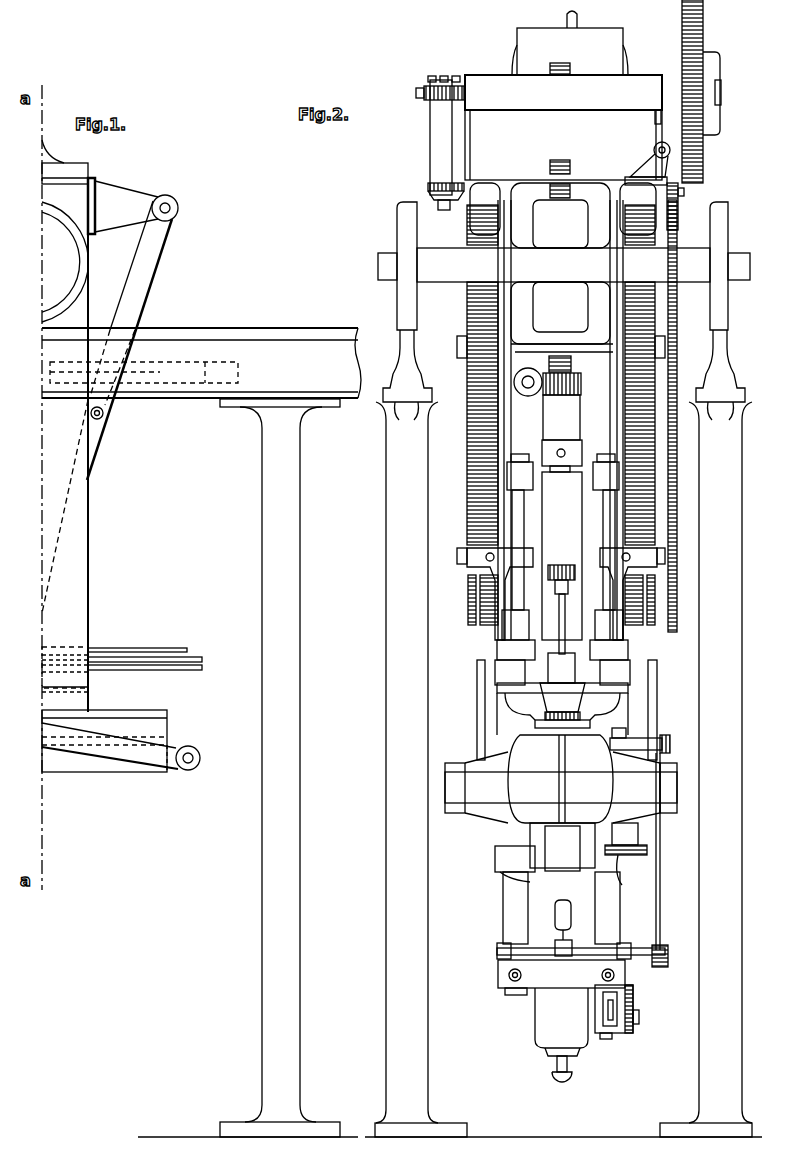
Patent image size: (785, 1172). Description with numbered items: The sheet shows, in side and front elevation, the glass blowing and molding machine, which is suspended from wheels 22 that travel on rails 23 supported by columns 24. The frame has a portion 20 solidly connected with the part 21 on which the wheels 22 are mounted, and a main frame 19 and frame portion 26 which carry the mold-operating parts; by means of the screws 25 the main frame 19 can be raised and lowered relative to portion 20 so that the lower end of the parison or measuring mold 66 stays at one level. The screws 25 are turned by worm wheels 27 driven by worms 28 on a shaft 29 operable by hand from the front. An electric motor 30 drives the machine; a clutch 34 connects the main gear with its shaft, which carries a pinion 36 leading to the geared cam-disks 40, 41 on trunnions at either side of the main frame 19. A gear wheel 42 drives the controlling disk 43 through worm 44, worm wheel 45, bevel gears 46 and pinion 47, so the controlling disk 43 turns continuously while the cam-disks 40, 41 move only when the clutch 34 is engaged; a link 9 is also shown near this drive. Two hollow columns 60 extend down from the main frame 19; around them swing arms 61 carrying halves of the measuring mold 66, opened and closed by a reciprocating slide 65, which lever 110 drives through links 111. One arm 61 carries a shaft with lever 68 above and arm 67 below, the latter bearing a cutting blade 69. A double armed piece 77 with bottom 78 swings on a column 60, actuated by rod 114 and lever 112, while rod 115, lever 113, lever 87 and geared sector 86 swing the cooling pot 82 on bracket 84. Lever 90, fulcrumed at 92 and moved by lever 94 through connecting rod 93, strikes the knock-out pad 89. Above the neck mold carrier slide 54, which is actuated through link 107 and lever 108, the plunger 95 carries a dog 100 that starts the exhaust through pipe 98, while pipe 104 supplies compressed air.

In FIG. 2, the link 9 is at (654, 150).
In FIG. 1, the main frame 19 is at (75, 577).
In FIG. 2, the main frame 19 is at (508, 265).
In FIG. 2, the frame portion 20 is at (563, 231).
In FIG. 2, the frame part 21 is at (563, 265).
In FIG. 1, the wheels 22 is at (65, 262).
In FIG. 2, the wheels 22 is at (400, 226).
In FIG. 1, the rails 23 is at (201, 363).
In FIG. 2, the rails 23 is at (408, 364).
In FIG. 1, the columns 24 is at (248, 768).
In FIG. 2, the columns 24 is at (563, 769).
In FIG. 2, the screws 25 is at (560, 160).
In FIG. 2, the frame portion 26 is at (562, 531).
In FIG. 2, the worm wheels 27 is at (562, 406).
In FIG. 2, the worms 28 is at (530, 368).
In FIG. 1, the shaft 29 is at (163, 384).
In FIG. 2, the shaft 29 is at (524, 392).
In FIG. 2, the electric motor 30 is at (563, 60).
In FIG. 2, the clutch 34 is at (710, 78).
In FIG. 2, the pinion 36 is at (560, 63).
In FIG. 2, the geared cam-disk 40 is at (472, 367).
In FIG. 2, the geared cam-disk 41 is at (658, 363).
In FIG. 2, the gear wheel 42 is at (681, 25).
In FIG. 2, the controlling disk 43 is at (680, 488).
In FIG. 2, the worm 44 is at (436, 80).
In FIG. 2, the worm wheel 45 is at (453, 84).
In FIG. 2, the bevel gears 46 is at (446, 204).
In FIG. 2, the pinion 47 is at (684, 192).
In FIG. 2, the neck mold carrier slide 54 is at (562, 702).
In FIG. 2, the hollow columns 60 is at (561, 908).
In FIG. 2, the arms 61 is at (561, 779).
In FIG. 1, the reciprocating slide 65 is at (98, 762).
In FIG. 2, the parison or measuring mold 66 is at (537, 813).
In FIG. 2, the arm 67 is at (635, 872).
In FIG. 2, the lever 68 is at (665, 748).
In FIG. 2, the cutting blade 69 is at (620, 850).
In FIG. 2, the double armed piece 77 is at (505, 864).
In FIG. 2, the bottom 78 is at (562, 847).
In FIG. 2, the cooling pot 82 is at (561, 1022).
In FIG. 2, the bracket 84 is at (561, 977).
In FIG. 2, the geared sector 86 is at (633, 1003).
In FIG. 2, the lever 87 is at (600, 1020).
In FIG. 2, the knock-out pad 89 is at (572, 1065).
In FIG. 2, the lever 90 is at (562, 908).
In FIG. 2, the fulcrum 92 is at (637, 948).
In FIG. 2, the connecting rod 93 is at (662, 887).
In FIG. 2, the lever 94 is at (668, 958).
In FIG. 2, the plunger 95 is at (560, 630).
In FIG. 1, the pipe 98 is at (163, 670).
In FIG. 2, the dog 100 is at (562, 565).
In FIG. 1, the pipe 104 is at (158, 648).
In FIG. 1, the link 107 is at (64, 506).
In FIG. 1, the lever 108 is at (146, 287).
In FIG. 2, the lever 110 is at (479, 637).
In FIG. 1, the links 111 is at (147, 754).
In FIG. 2, the links 111 is at (648, 718).
In FIG. 2, the lever 112 is at (533, 479).
In FIG. 2, the lever 113 is at (592, 481).
In FIG. 2, the rod 114 is at (514, 508).
In FIG. 2, the rod 115 is at (608, 515).